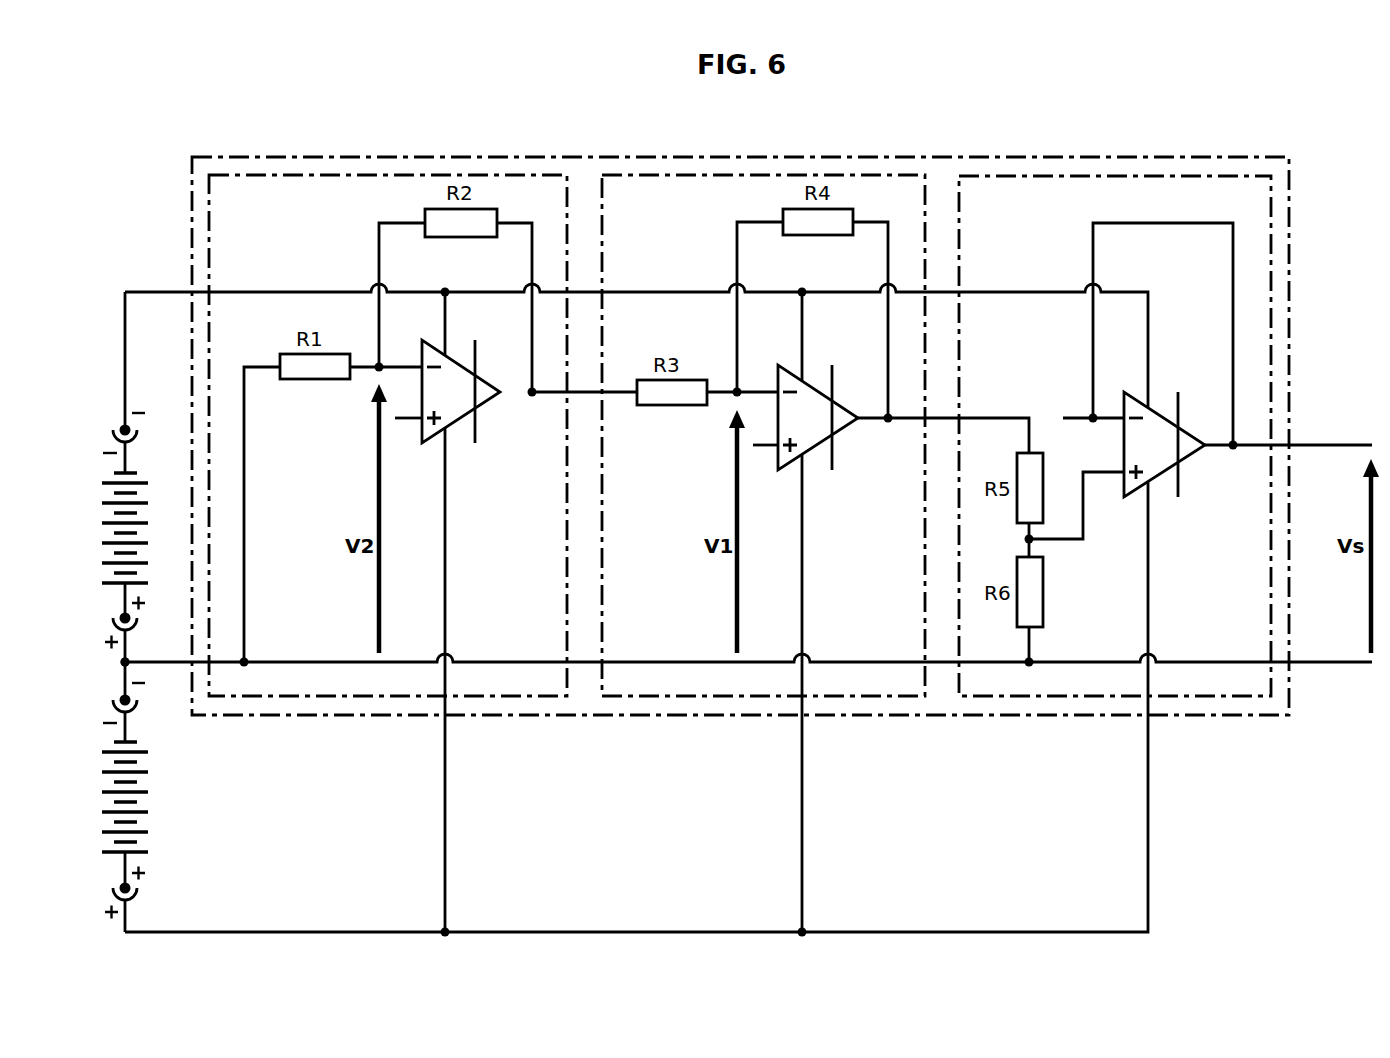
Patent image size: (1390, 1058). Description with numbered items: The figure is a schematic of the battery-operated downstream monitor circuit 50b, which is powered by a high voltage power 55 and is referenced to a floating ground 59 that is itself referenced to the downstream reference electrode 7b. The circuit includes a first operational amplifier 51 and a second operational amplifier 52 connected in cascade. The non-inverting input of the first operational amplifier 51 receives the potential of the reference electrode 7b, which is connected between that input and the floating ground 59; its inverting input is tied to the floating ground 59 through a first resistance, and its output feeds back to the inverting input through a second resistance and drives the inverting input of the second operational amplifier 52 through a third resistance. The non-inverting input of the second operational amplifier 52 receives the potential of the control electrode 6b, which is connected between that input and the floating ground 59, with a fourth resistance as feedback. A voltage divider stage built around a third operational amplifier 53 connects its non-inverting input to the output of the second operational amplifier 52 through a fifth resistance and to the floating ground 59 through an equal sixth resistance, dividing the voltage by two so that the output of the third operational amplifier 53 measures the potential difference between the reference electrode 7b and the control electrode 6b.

The downstream monitor circuit 50b is at (737, 156).
The downstream reference electrode 7b is at (388, 435).
The downstream control electrode 6b is at (763, 435).
The first operational amplifier 51 is at (488, 409).
The second operational amplifier 52 is at (843, 432).
The third operational amplifier 53 is at (1190, 460).
The high voltage power 55 is at (159, 800).
The floating ground 59 is at (123, 662).